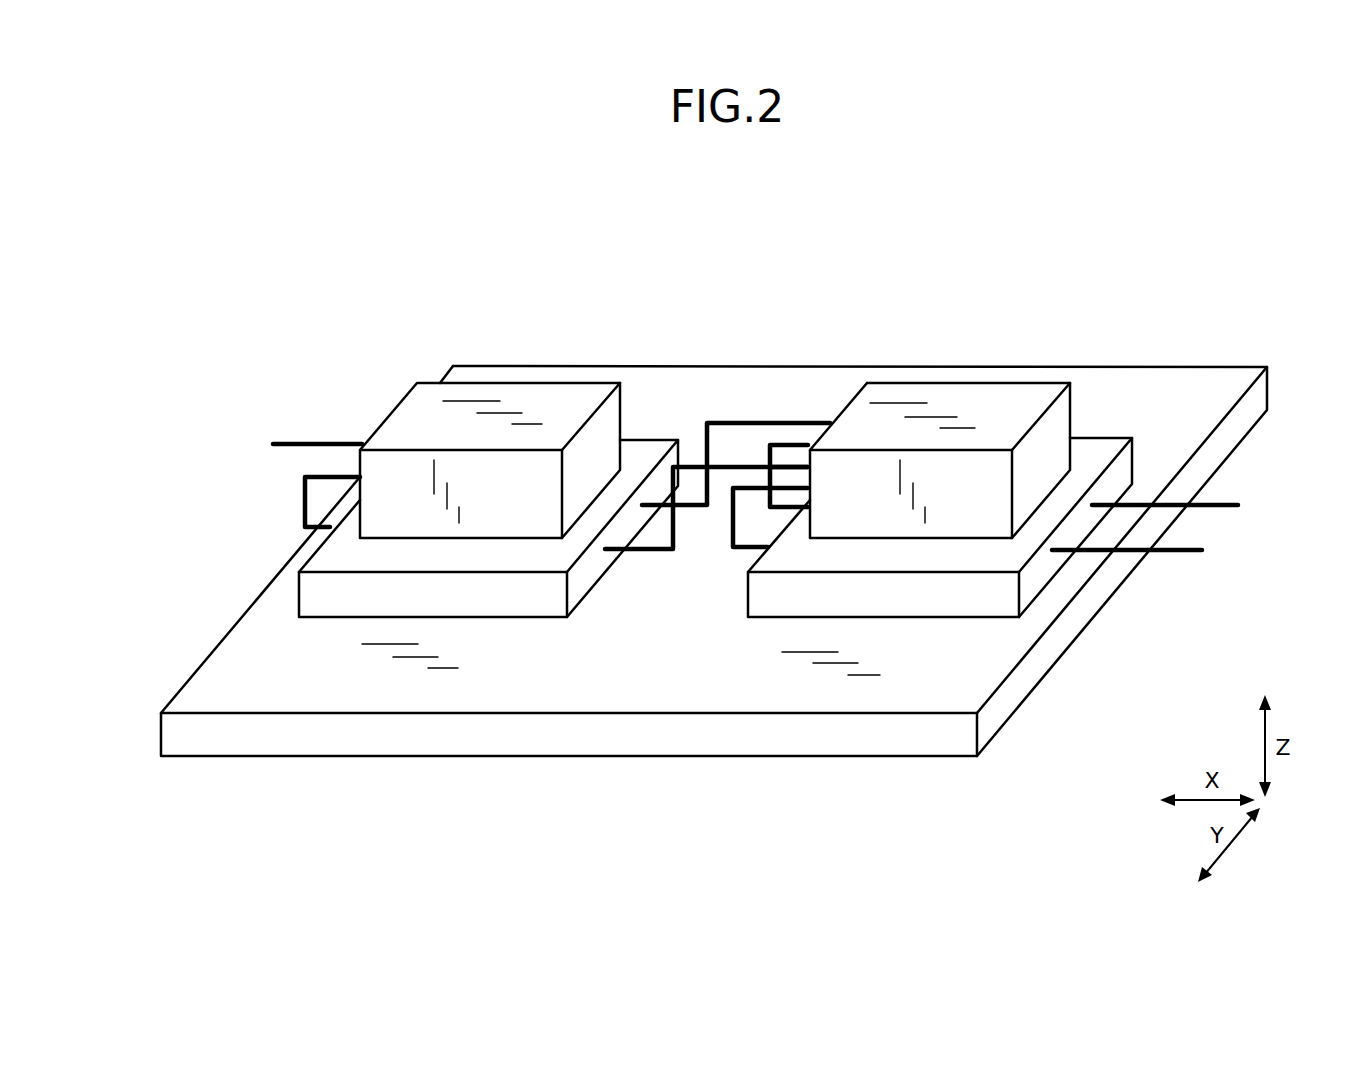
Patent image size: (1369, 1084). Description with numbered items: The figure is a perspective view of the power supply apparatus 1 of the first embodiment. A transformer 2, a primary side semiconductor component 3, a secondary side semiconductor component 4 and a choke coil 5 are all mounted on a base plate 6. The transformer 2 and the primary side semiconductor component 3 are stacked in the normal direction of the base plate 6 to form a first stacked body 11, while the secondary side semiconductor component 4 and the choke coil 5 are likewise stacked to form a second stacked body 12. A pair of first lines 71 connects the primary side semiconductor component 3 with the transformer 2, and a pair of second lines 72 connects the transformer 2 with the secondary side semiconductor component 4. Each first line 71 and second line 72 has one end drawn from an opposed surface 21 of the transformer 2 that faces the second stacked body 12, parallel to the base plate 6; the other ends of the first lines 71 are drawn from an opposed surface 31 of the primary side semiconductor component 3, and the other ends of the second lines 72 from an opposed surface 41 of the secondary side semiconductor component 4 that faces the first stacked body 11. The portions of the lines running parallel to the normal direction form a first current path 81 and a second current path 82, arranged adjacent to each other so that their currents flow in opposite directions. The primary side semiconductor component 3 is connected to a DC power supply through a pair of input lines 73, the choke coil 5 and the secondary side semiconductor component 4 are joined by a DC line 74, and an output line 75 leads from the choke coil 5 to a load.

The power supply apparatus 1 is at (997, 270).
The transformer 2 is at (1010, 407).
The primary side semiconductor component 3 is at (890, 597).
The secondary side semiconductor component 4 is at (333, 597).
The choke coil 5 is at (528, 397).
The base plate 6 is at (1187, 435).
The first stacked body 11 is at (1110, 392).
The second stacked body 12 is at (395, 380).
The opposed surface 21 is at (845, 395).
The opposed surface 31 is at (745, 588).
The opposed surface 41 is at (578, 590).
The first line 71 is at (795, 447).
The second line 72 is at (733, 465).
The input line 73 is at (1220, 507).
The DC line 74 is at (305, 503).
The output line 75 is at (297, 442).
The first current path 81 is at (660, 778).
The second current path 82 is at (602, 827).